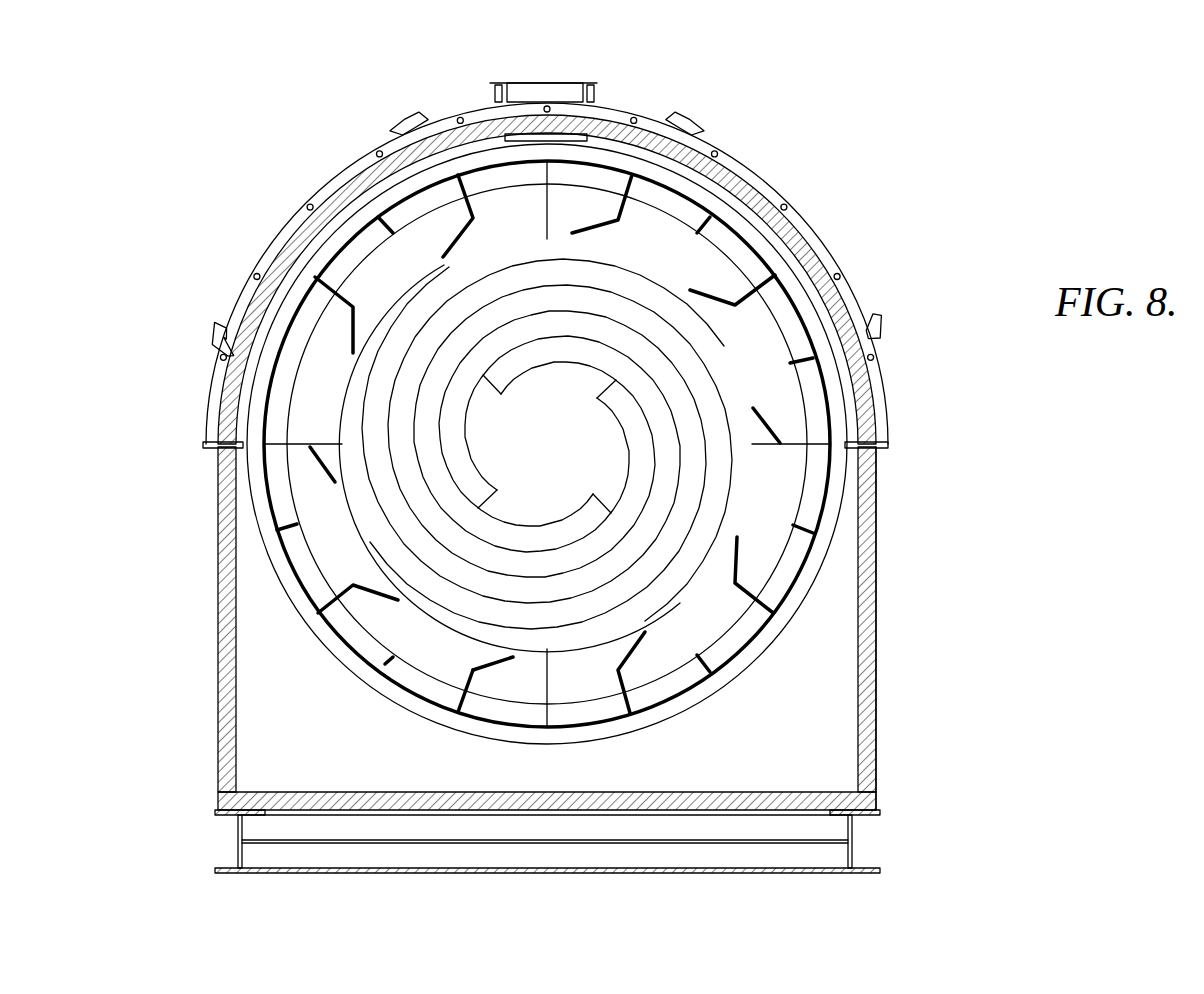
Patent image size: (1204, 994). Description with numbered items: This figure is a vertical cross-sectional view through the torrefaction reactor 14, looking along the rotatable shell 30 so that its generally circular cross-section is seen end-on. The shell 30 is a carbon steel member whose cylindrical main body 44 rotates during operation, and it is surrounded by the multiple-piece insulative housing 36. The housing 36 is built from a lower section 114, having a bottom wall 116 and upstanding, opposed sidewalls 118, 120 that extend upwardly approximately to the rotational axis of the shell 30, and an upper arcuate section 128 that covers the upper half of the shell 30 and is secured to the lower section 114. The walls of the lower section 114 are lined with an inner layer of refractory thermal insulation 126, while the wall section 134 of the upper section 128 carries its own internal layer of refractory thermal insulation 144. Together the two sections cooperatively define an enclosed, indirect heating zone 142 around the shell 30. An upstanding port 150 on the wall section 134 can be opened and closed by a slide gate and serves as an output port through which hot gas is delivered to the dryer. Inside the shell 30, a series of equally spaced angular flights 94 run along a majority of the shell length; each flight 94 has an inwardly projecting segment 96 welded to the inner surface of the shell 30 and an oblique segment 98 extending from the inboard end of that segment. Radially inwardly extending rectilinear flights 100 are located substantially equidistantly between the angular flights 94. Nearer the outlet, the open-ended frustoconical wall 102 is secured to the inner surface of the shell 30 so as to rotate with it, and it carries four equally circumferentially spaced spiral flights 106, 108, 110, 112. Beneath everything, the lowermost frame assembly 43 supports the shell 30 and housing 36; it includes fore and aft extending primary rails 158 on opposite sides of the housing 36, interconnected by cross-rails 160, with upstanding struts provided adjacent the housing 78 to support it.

The torrefaction reactor 14 is at (905, 222).
The shell 30 is at (268, 553).
The insulative housing 36 is at (920, 388).
The frame assembly 43 is at (882, 822).
The cylindrical main body 44 is at (298, 578).
The housing 78 is at (870, 312).
The angular flight 94 is at (482, 650).
The inwardly projecting segment 96 is at (470, 687).
The oblique segment 98 is at (493, 667).
The rectilinear flight 100 is at (700, 655).
The frustoconical wall 102 is at (820, 483).
The spiral flight 106 is at (363, 622).
The spiral flight 108 is at (767, 558).
The spiral flight 110 is at (733, 267).
The spiral flight 112 is at (358, 277).
The lower section 114 is at (878, 600).
The bottom wall 116 is at (535, 812).
The sidewall 118 is at (217, 688).
The sidewall 120 is at (878, 668).
The refractory thermal insulation 126 is at (790, 795).
The upper arcuate section 128 is at (226, 272).
The wall section 134 is at (690, 148).
The indirect heating zone 142 is at (640, 778).
The refractory thermal insulation 144 is at (335, 195).
The port 150 is at (560, 92).
The primary rail 158 is at (240, 825).
The cross-rail 160 is at (680, 858).